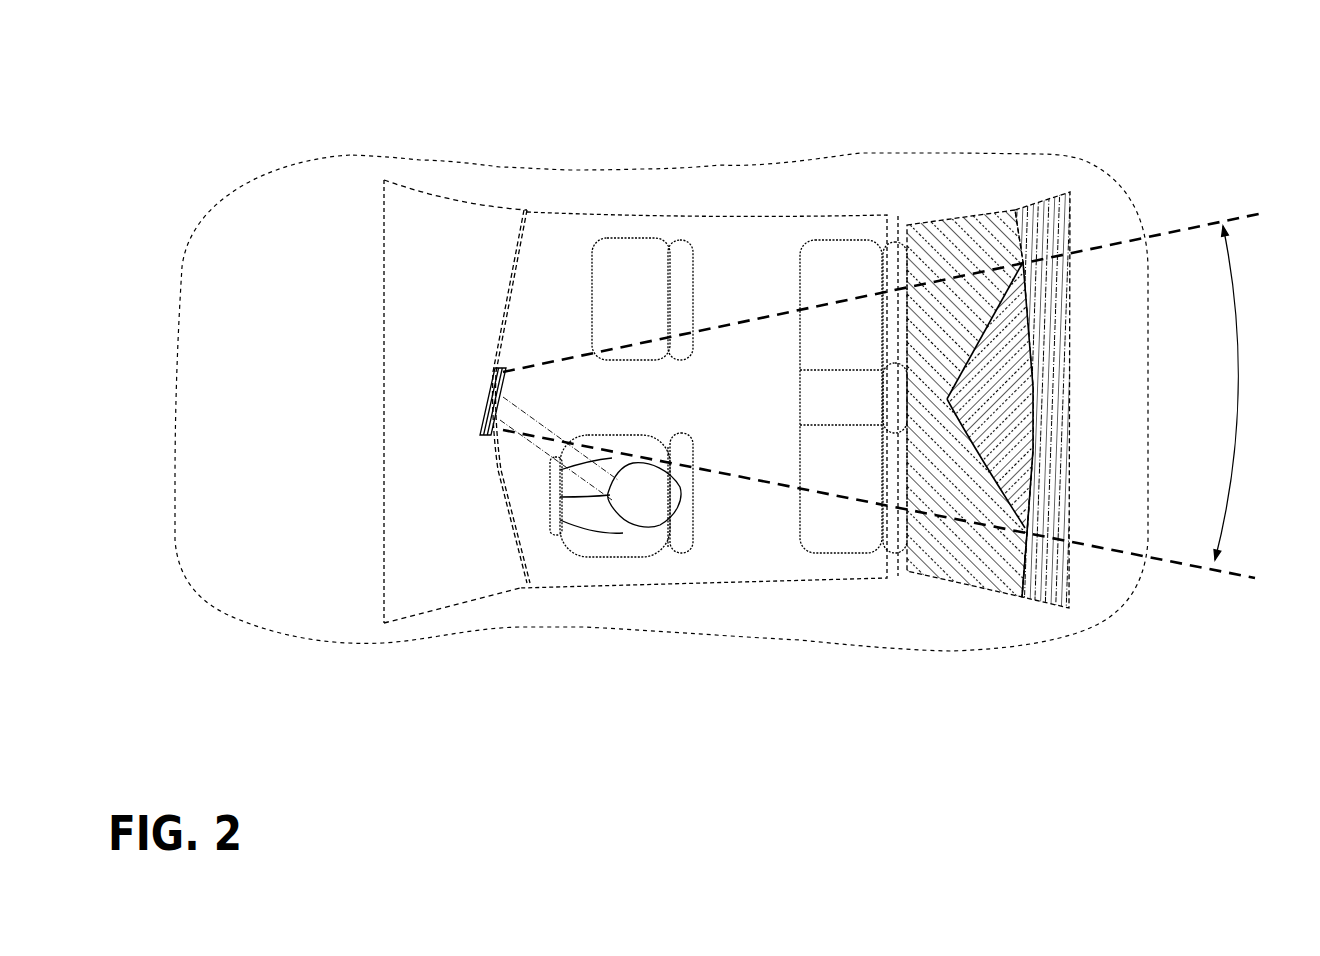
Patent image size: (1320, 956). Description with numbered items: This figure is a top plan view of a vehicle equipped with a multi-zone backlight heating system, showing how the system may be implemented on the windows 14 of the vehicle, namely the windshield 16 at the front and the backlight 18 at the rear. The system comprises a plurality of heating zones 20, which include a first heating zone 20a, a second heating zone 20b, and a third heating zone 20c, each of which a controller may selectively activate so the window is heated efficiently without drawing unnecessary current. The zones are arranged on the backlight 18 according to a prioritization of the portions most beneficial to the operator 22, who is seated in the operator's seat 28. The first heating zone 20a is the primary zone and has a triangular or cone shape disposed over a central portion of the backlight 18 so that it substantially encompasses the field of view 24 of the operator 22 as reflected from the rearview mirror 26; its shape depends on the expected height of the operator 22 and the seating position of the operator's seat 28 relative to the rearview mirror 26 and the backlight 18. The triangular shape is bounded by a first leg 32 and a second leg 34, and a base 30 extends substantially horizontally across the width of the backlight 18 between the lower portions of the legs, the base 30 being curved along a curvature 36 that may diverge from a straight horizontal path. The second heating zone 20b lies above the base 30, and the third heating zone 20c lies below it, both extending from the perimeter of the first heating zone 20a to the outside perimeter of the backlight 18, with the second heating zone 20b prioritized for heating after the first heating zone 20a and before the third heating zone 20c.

The window 14 is at (728, 319).
The windshield 16 is at (460, 228).
The backlight 18 is at (1027, 192).
The heating zones 20 is at (883, 392).
The first heating zone 20a is at (1018, 336).
The second heating zone 20b is at (987, 233).
The third heating zone 20c is at (1047, 567).
The operator 22 is at (638, 542).
The field of view 24 is at (1240, 403).
The rearview mirror 26 is at (490, 397).
The operator's seat 28 is at (685, 542).
The base 30 is at (1037, 386).
The first leg 32 is at (985, 465).
The second leg 34 is at (985, 340).
The curvature 36 is at (1038, 451).